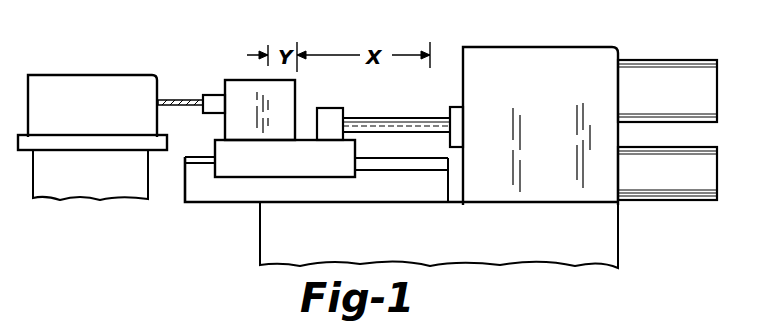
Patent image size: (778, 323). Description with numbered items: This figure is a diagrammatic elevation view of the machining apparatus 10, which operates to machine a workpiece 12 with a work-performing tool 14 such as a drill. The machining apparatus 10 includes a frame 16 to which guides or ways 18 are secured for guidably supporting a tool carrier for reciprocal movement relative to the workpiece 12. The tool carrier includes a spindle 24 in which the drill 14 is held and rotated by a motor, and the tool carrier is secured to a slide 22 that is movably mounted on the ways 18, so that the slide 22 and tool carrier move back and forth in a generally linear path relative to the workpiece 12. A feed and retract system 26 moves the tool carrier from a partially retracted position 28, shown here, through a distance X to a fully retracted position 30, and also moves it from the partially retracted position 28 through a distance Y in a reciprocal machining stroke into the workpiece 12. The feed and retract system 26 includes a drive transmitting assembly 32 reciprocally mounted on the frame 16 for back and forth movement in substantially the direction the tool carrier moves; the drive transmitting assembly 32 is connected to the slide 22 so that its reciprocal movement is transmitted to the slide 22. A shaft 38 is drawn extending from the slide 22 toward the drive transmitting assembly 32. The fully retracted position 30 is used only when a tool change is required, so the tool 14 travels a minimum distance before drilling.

The machining apparatus 10 is at (455, 35).
The workpiece 12 is at (77, 75).
The work-performing tool 14 is at (178, 97).
The frame 16 is at (262, 230).
The ways 18 is at (184, 160).
The slide 22 is at (310, 172).
The spindle 24 is at (212, 108).
The feed and retract system 26 is at (597, 33).
The partially retracted position 28 is at (232, 58).
The fully retracted position 30 is at (432, 58).
The drive transmitting assembly 32 is at (445, 110).
The feed shaft 38 is at (380, 125).